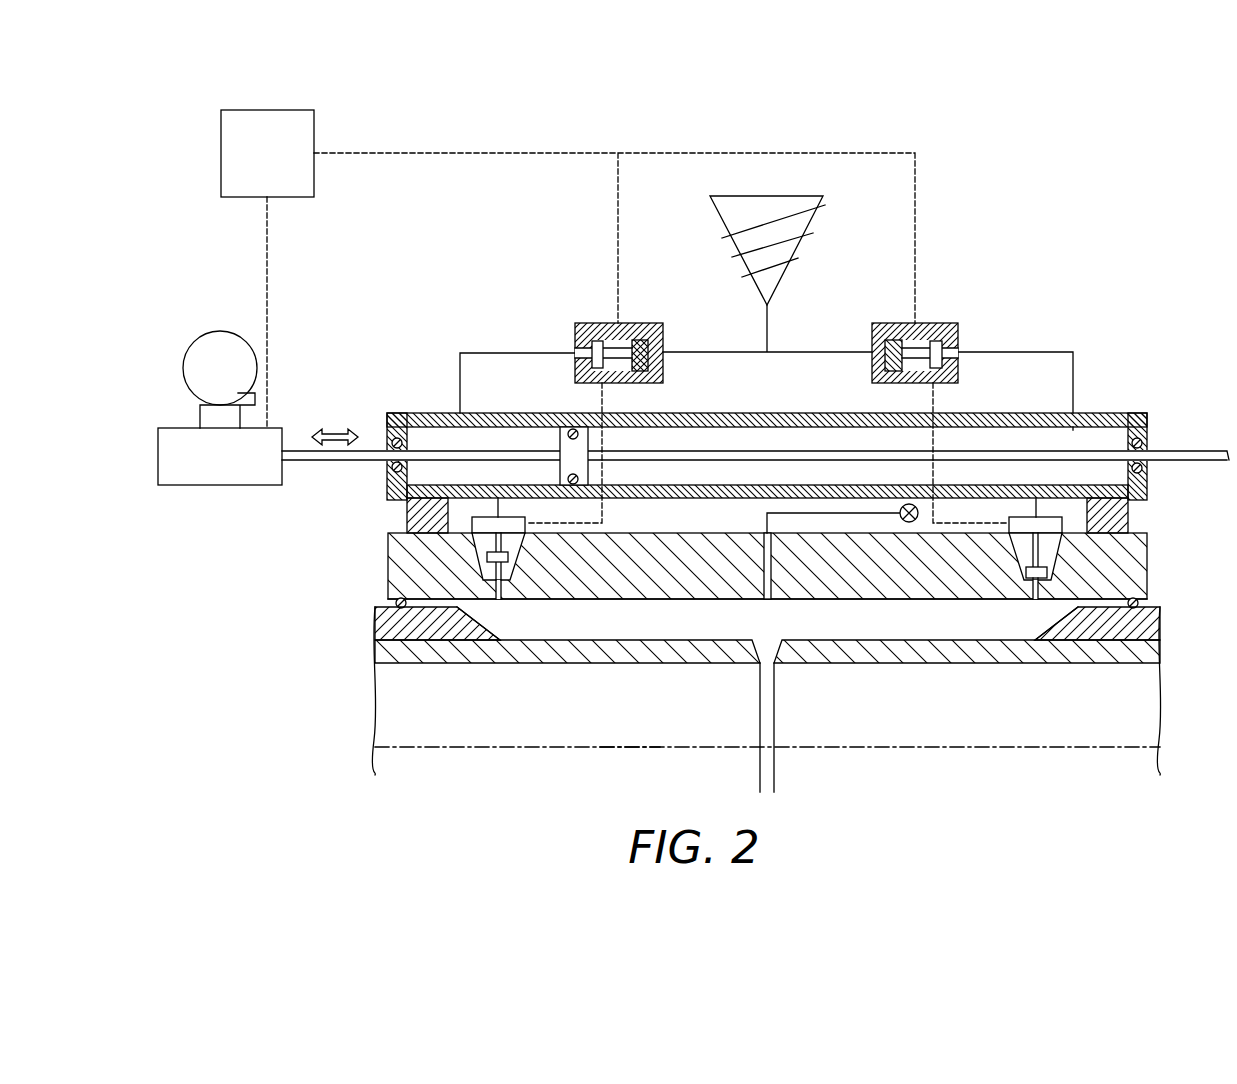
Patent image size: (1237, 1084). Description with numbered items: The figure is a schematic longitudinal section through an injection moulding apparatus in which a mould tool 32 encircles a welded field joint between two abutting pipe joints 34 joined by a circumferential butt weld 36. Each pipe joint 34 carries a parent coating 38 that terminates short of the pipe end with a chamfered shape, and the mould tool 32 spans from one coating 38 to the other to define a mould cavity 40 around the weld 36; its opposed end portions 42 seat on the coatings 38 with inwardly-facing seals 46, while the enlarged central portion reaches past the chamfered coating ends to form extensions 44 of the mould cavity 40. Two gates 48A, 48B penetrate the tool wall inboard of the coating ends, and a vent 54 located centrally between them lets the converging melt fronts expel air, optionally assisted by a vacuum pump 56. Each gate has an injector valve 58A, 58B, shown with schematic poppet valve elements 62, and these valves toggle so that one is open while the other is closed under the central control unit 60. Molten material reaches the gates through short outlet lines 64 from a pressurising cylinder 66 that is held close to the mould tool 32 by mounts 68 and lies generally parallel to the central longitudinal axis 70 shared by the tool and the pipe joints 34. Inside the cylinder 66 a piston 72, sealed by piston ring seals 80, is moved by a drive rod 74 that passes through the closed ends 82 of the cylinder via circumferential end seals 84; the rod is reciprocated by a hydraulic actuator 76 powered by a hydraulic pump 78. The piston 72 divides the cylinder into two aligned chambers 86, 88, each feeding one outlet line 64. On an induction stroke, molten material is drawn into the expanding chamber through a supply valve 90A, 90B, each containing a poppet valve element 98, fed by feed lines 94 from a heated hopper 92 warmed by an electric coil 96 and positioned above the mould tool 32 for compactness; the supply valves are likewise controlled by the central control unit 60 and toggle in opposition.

The mould tool 32 is at (392, 547).
The pipe joints 34 is at (503, 746).
The circumferential butt weld 36 is at (777, 713).
The parent coating 38 is at (378, 628).
The mould cavity 40 is at (688, 632).
The end portions 42 is at (395, 582).
The extensions 44 is at (440, 604).
The inwardly-facing seals 46 is at (396, 604).
The first gate 48A is at (498, 600).
The second gate 48B is at (1037, 600).
The vent 54 is at (768, 575).
The vacuum pump 56 is at (902, 506).
The first injector valve 58A is at (527, 521).
The second injector valve 58B is at (1003, 521).
The central control unit 60 is at (254, 164).
The poppet valve elements 62 is at (512, 558).
The outlet lines 64 is at (497, 500).
The pressurising cylinder 66 is at (830, 412).
The mounts 68 is at (410, 514).
The central longitudinal axis 70 is at (632, 748).
The piston 72 is at (560, 440).
The drive rod 74 is at (303, 462).
The hydraulic actuator 76 is at (207, 468).
The hydraulic pump 78 is at (207, 379).
The piston ring seals 80 is at (567, 479).
The closed ends 82 is at (388, 420).
The circumferential end seals 84 is at (388, 470).
The first chamber 86 is at (427, 440).
The second chamber 88 is at (1105, 440).
The first supply valve 90A is at (575, 331).
The second supply valve 90B is at (958, 331).
The heated hopper 92 is at (715, 212).
The feed lines 94 is at (730, 352).
The electric coil 96 is at (823, 210).
The poppet valve elements 98 is at (601, 323).